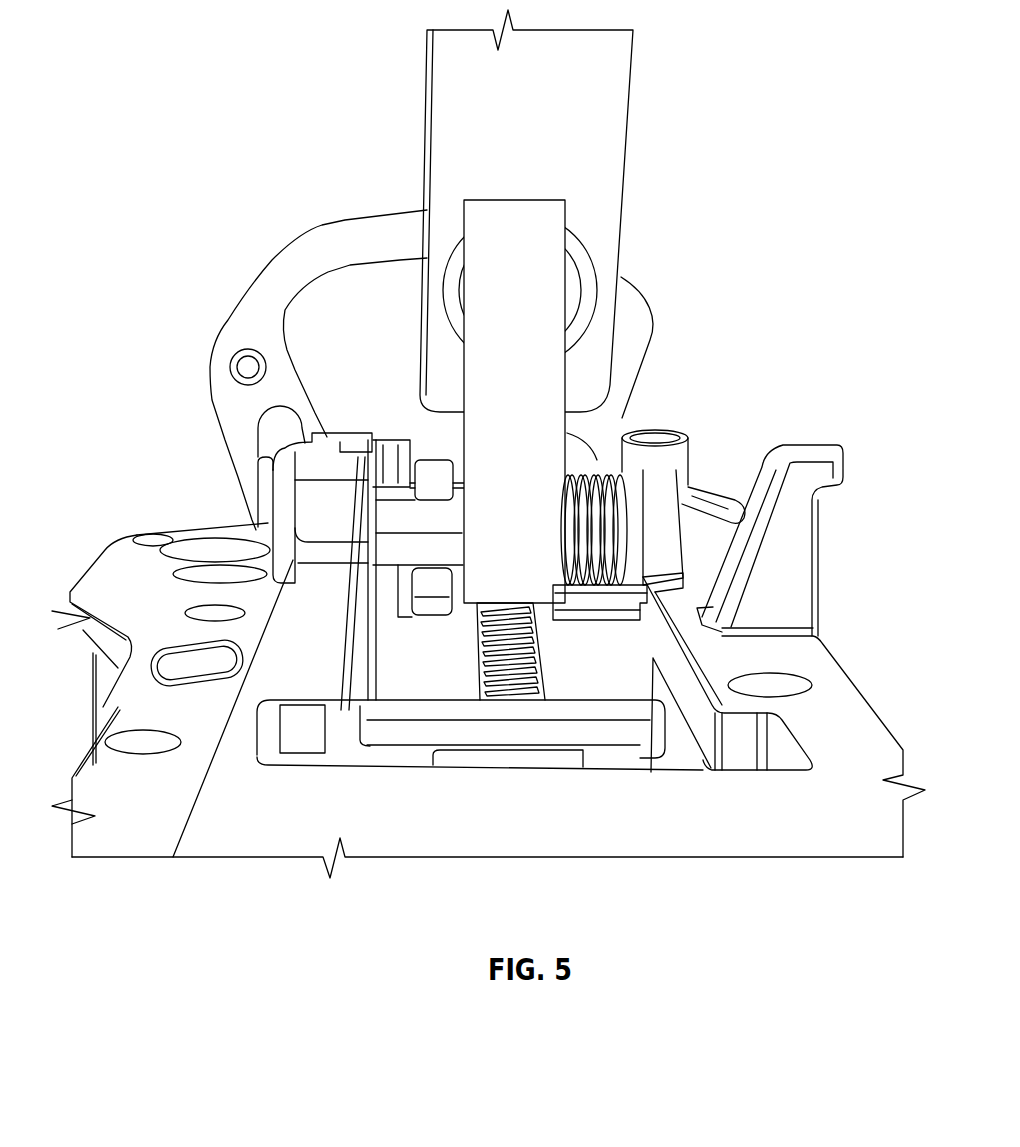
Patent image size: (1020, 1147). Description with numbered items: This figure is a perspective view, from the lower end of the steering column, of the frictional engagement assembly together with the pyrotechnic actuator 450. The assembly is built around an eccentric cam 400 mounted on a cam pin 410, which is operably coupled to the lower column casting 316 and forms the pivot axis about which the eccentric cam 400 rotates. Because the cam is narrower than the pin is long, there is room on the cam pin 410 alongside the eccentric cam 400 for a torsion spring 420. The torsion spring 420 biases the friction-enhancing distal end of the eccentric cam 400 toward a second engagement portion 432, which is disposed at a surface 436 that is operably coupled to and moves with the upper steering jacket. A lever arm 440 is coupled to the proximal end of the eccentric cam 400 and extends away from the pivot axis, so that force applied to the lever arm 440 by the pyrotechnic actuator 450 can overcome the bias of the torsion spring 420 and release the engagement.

The pyrotechnic actuator 450 is at (447, 104).
The lever arm 440 is at (505, 295).
The cam pin 410 is at (407, 520).
The torsion spring 420 is at (618, 505).
The lower column casting 316 is at (747, 703).
The eccentric cam 400 is at (473, 533).
The surface 436 is at (440, 678).
The second engagement portion 432 is at (533, 675).